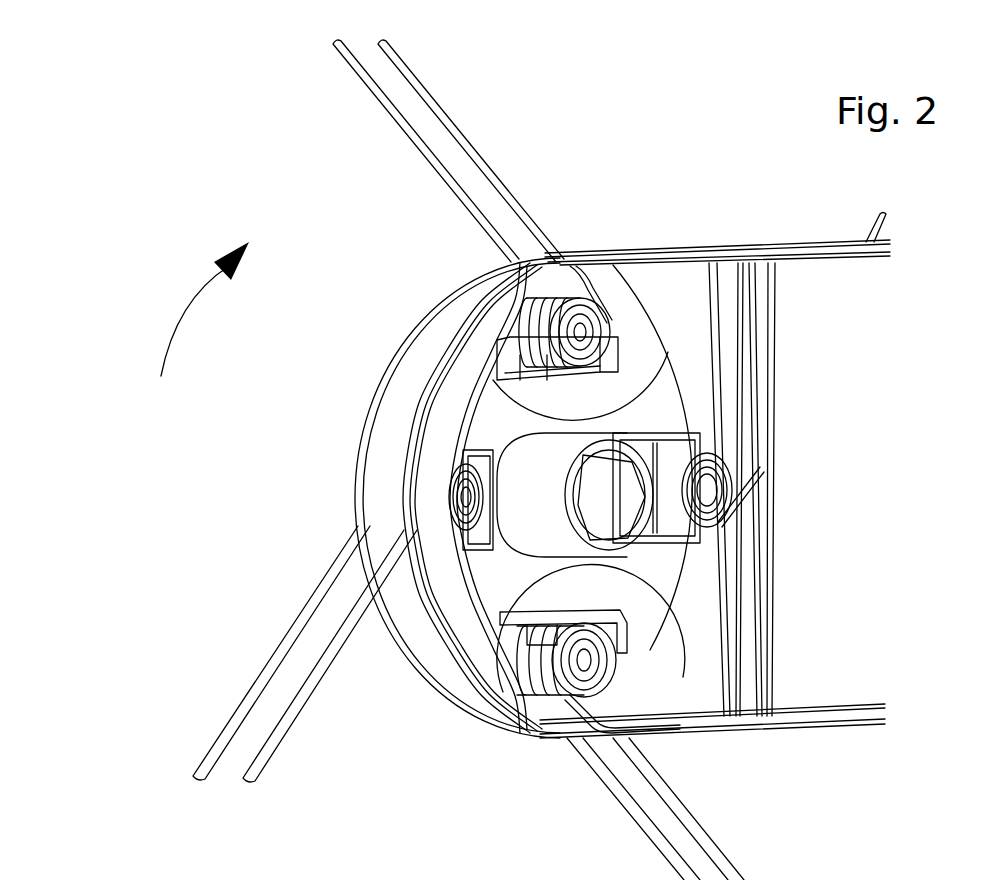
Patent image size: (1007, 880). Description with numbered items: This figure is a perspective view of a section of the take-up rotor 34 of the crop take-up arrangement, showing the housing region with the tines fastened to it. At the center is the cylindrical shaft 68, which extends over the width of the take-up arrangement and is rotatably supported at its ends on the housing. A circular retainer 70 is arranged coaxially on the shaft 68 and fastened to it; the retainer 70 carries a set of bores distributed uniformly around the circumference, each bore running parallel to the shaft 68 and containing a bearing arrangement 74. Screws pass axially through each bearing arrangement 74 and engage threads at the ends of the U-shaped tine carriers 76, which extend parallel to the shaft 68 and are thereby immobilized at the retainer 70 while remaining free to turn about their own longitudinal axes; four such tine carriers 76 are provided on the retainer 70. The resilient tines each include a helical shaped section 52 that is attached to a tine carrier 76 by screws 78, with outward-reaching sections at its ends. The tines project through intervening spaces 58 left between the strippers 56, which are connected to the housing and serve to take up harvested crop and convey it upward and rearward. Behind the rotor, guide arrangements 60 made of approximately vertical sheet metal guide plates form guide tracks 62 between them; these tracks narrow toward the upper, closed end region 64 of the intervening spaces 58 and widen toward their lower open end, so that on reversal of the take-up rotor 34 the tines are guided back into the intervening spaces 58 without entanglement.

The take-up rotor 34 is at (729, 754).
The helical shaped section 52 is at (537, 733).
The strippers 56 is at (372, 452).
The intervening spaces 58 is at (476, 284).
The guide arrangements 60 is at (795, 284).
The guide tracks 62 is at (753, 703).
The upper, closed end region 64 is at (522, 262).
The shaft 68 is at (530, 535).
The retainer 70 is at (485, 417).
The bearing arrangements 74 is at (650, 606).
The tine carriers 76 is at (572, 676).
The screws 78 is at (592, 336).